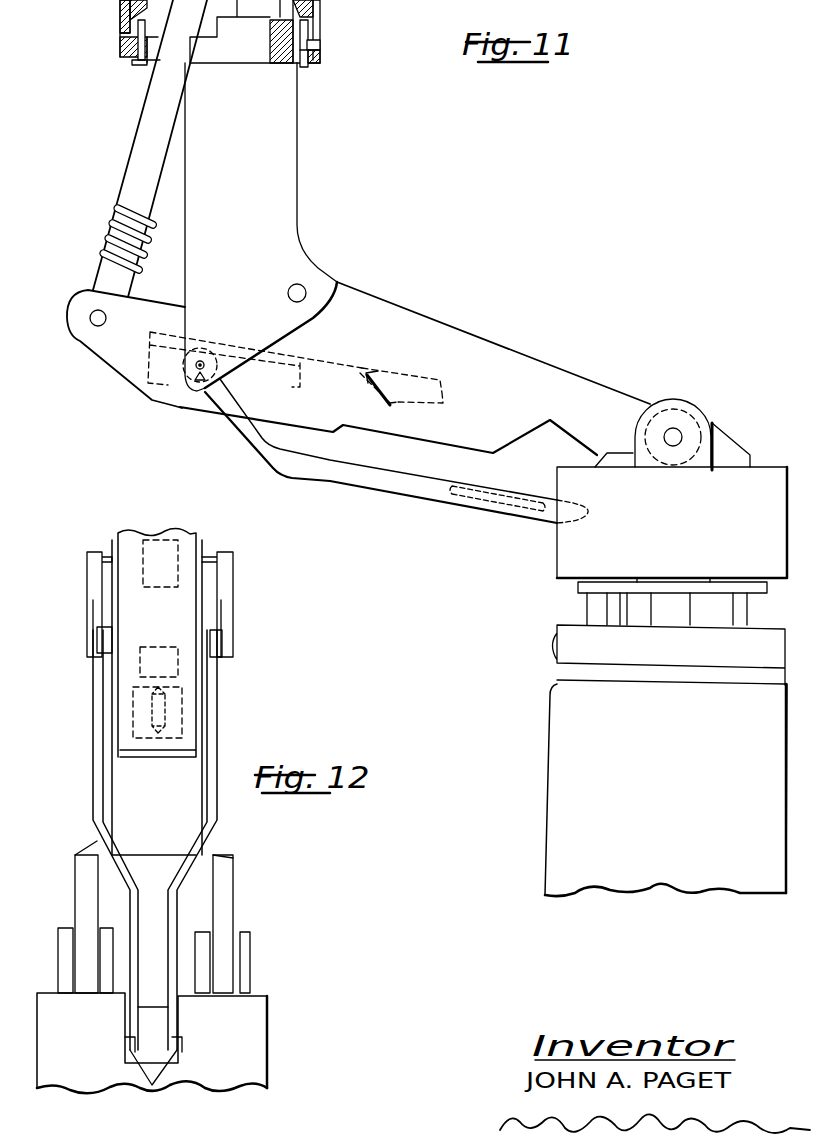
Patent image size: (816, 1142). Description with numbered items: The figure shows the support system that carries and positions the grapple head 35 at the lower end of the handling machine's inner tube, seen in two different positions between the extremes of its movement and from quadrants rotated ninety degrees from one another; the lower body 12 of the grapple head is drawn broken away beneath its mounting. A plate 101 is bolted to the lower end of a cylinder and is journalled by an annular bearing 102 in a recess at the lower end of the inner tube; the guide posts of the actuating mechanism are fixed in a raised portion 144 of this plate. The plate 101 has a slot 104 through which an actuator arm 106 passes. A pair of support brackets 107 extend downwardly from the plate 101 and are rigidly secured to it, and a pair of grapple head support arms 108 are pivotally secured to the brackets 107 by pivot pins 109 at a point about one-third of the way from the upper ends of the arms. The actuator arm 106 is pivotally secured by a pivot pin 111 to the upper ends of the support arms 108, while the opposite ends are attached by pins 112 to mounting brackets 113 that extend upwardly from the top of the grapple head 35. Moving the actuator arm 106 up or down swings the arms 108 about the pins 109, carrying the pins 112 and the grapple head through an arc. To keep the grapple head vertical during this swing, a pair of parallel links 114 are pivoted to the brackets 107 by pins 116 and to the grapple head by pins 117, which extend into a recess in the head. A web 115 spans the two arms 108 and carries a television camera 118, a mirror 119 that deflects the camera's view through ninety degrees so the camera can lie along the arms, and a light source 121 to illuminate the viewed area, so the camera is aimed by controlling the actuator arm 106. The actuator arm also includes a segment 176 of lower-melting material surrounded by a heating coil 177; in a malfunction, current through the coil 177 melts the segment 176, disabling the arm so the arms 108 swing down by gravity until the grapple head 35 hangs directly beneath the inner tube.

In FIG. 11, the plate 101 is at (128, 64).
In FIG. 11, the annular bearing 102 is at (130, 40).
In FIG. 11, the slot 104 is at (207, 50).
In FIG. 11, the raised portion 144 is at (258, 32).
In FIG. 11, the actuator arm 106 is at (158, 153).
In FIG. 11, the segment 176 is at (150, 223).
In FIG. 11, the heating coil 177 is at (147, 257).
In FIG. 11, the support brackets 107 is at (280, 225).
In FIG. 12, the support brackets 107 is at (92, 607).
In FIG. 11, the pivot pins 109 is at (299, 289).
In FIG. 12, the pivot pins 109 is at (108, 553).
In FIG. 11, the grapple head support arms 108 is at (505, 350).
In FIG. 12, the grapple head support arms 108 is at (110, 571).
In FIG. 11, the pivot pin 111 is at (92, 323).
In FIG. 11, the pins 112 is at (677, 428).
In FIG. 11, the mounting brackets 113 is at (708, 446).
In FIG. 12, the mounting brackets 113 is at (244, 935).
In FIG. 11, the parallel links 114 is at (347, 474).
In FIG. 12, the parallel links 114 is at (97, 843).
In FIG. 11, the web 115 is at (318, 357).
In FIG. 12, the web 115 is at (192, 699).
In FIG. 11, the pins 116 is at (197, 388).
In FIG. 12, the pins 116 is at (95, 645).
In FIG. 12, the pins 117 is at (153, 1075).
In FIG. 11, the television camera 118 is at (147, 391).
In FIG. 12, the television camera 118 is at (163, 540).
In FIG. 11, the mirror 119 is at (358, 400).
In FIG. 12, the mirror 119 is at (158, 647).
In FIG. 11, the light source 121 is at (462, 420).
In FIG. 12, the light source 121 is at (178, 723).
In FIG. 11, the grapple head 35 is at (541, 653).
In FIG. 12, the grapple head 35 is at (280, 1030).
In FIG. 11, the container 12 is at (562, 746).